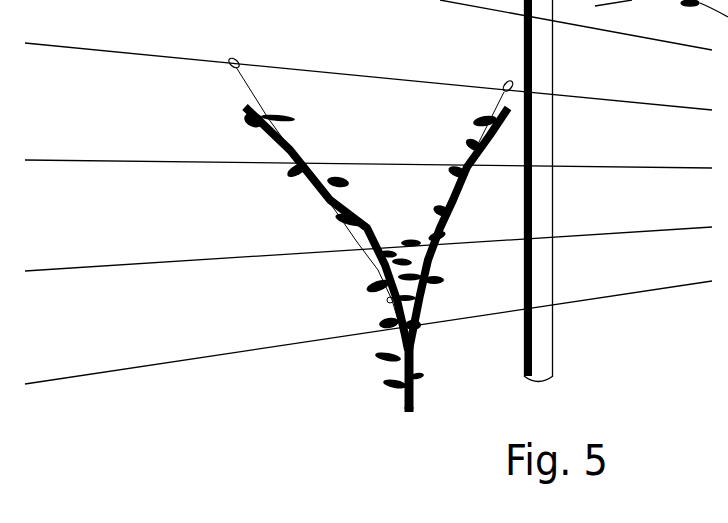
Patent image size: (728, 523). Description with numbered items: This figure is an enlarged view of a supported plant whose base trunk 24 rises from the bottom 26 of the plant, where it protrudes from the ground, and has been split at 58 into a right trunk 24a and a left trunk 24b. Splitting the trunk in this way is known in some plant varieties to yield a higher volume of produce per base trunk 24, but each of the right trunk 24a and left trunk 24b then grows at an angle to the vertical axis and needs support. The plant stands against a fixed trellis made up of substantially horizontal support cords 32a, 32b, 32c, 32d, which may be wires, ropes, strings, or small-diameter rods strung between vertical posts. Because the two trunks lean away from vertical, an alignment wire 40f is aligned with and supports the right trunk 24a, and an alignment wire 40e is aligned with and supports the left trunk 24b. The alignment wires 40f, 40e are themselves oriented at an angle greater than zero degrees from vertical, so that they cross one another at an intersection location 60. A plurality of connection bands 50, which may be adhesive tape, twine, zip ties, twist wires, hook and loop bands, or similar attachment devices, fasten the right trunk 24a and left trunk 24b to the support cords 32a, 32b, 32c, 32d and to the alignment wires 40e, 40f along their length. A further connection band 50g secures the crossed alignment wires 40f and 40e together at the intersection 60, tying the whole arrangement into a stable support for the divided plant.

The trunk 24 is at (418, 383).
The right trunk 24a is at (456, 195).
The left trunk 24b is at (368, 226).
The bottom of the plant 26 is at (404, 397).
The support cord 32a is at (117, 370).
The support cord 32b is at (70, 270).
The support cord 32c is at (62, 160).
The support cord 32d is at (80, 48).
The alignment wire 40e is at (248, 86).
The alignment wire 40f is at (500, 100).
The connection band 50 is at (307, 158).
The connection band 50g is at (397, 302).
The split 58 is at (419, 352).
The intersection location 60 is at (387, 300).